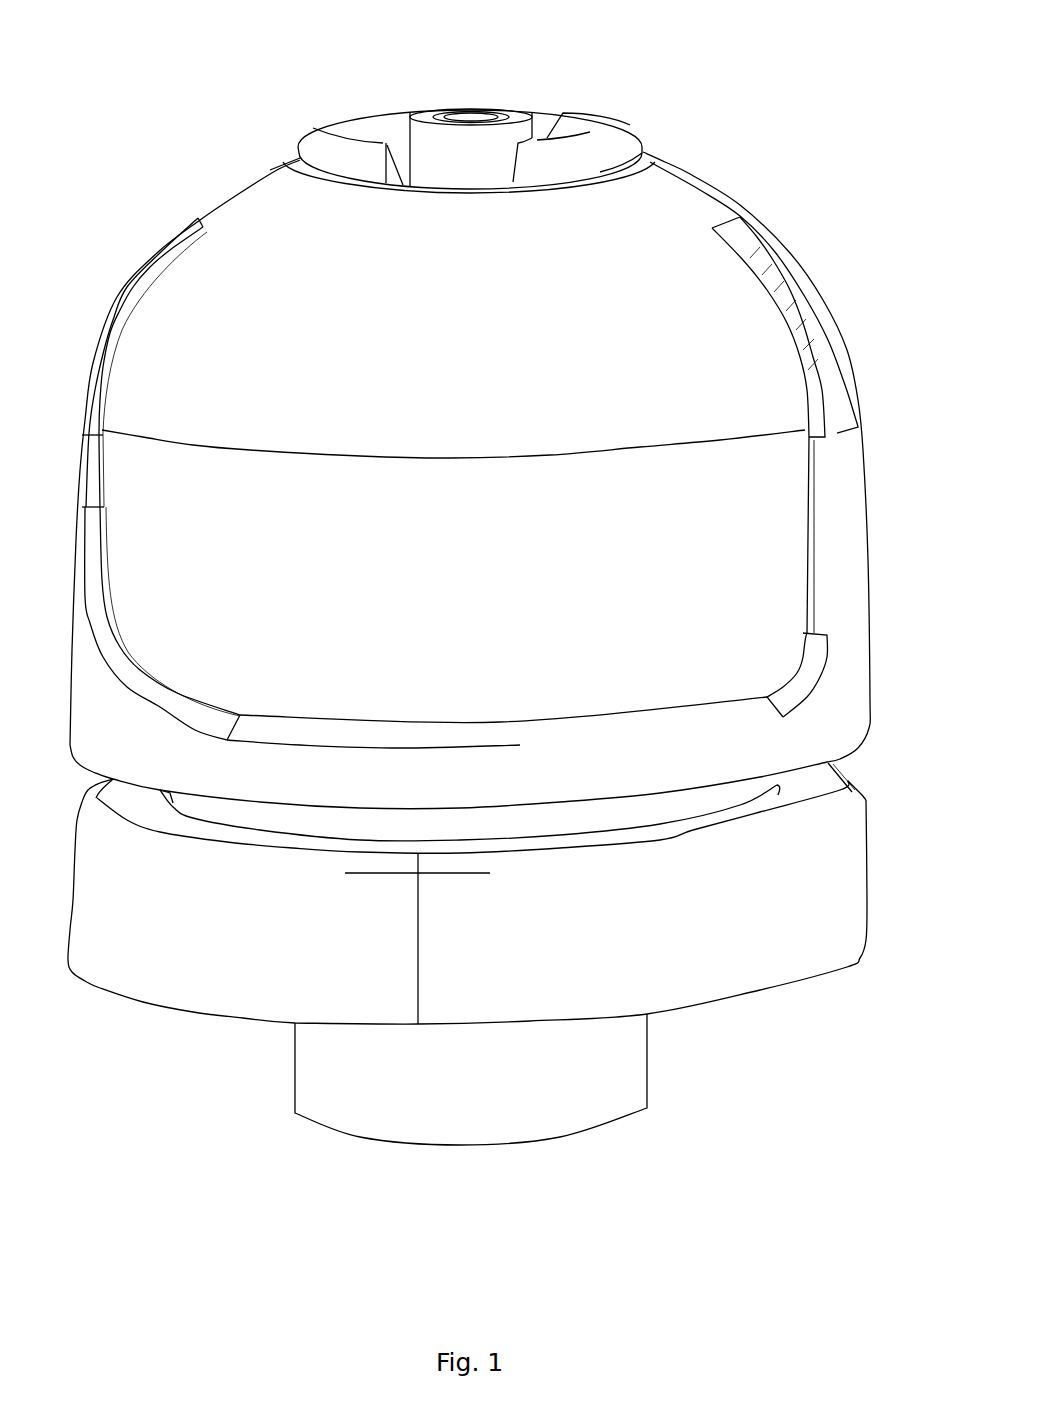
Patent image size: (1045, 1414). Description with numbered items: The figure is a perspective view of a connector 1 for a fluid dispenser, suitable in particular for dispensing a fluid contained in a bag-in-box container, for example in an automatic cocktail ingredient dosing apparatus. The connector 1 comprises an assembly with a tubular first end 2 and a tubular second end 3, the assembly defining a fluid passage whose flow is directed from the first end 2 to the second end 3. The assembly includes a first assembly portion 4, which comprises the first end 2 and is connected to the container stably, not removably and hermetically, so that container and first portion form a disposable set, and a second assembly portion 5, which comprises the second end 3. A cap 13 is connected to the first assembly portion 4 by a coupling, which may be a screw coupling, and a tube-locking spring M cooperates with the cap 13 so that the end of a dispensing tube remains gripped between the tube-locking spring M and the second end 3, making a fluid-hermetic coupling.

The connector 1 is at (124, 88).
The first end 2 is at (250, 1152).
The second end 3 is at (406, 94).
The first assembly portion 4 is at (717, 1030).
The second assembly portion 5 is at (148, 233).
The cap 13 is at (747, 368).
The tube-locking spring M is at (627, 148).